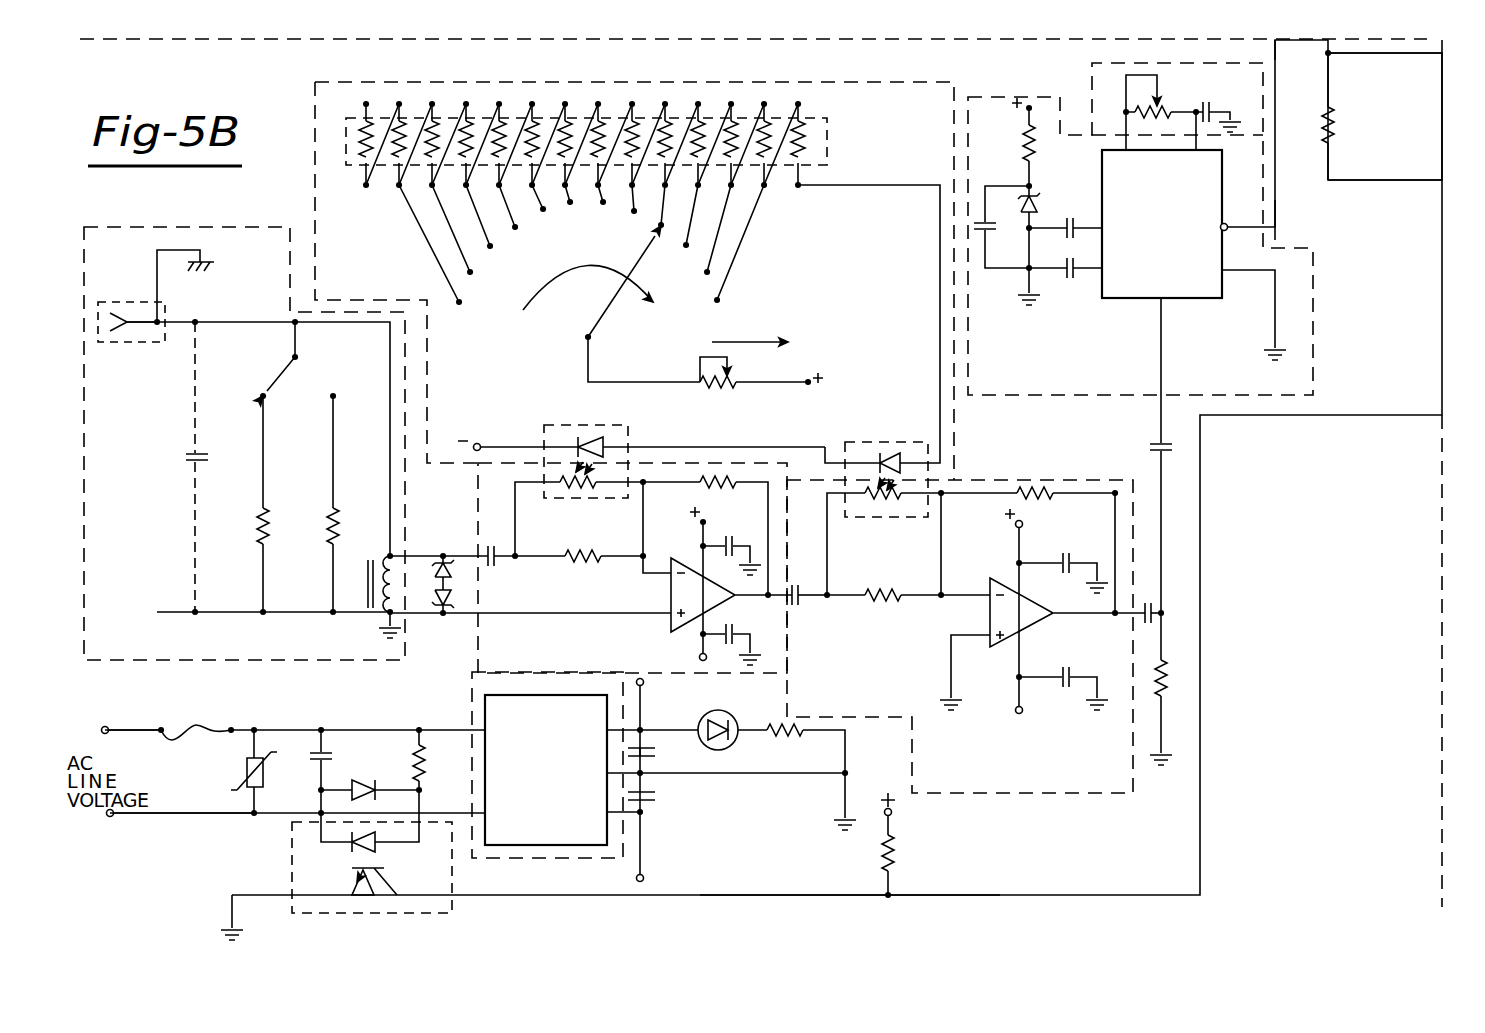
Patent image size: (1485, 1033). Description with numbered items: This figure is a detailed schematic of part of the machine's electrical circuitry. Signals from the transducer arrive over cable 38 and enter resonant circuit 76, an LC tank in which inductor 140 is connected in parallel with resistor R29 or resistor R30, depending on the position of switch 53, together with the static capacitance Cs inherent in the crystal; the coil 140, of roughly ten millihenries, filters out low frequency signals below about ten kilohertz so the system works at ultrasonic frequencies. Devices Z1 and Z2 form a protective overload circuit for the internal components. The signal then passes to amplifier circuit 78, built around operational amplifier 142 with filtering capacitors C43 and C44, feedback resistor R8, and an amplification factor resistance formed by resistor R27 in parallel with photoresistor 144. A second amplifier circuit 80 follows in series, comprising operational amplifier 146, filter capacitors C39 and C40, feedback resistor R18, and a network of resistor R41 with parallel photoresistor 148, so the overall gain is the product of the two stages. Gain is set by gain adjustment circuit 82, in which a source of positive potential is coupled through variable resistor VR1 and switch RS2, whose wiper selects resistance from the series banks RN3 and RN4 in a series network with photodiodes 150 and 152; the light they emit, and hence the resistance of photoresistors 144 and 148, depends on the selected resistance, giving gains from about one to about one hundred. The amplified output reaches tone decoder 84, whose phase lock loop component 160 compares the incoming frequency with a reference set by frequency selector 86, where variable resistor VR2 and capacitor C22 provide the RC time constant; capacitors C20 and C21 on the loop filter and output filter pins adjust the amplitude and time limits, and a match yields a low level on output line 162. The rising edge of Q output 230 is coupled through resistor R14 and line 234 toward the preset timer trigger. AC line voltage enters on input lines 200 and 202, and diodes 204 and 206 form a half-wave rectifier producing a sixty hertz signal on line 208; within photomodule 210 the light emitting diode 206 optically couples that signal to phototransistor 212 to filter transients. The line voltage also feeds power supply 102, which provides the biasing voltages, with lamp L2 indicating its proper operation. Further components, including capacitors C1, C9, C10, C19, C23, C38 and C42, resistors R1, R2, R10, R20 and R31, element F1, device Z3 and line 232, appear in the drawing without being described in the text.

The resonant circuit 76 is at (208, 227).
The cable 38 is at (129, 342).
The switch 53 is at (300, 360).
The static capacitance Cs is at (202, 458).
The resistor R29 is at (258, 526).
The resistor R30 is at (328, 510).
The inductor 140 is at (380, 618).
The overload protection device Z1 is at (436, 562).
The overload protection device Z2 is at (440, 617).
The capacitor C42 is at (490, 540).
The amplifier circuit 78 is at (478, 472).
The gain adjustment circuit 82 is at (926, 82).
The resistor element bank RN3 is at (830, 142).
The resistor element bank RN4 is at (357, 166).
The pole switch RS2 is at (586, 330).
The photodiode 152 is at (600, 425).
The photoresistor 144 is at (564, 498).
The variable resistor VR1 is at (722, 386).
The amplification factor resistor R27 is at (580, 560).
The operational amplifier 142 is at (671, 618).
The feedback resistor R8 is at (710, 488).
The filtering capacitor C44 is at (744, 541).
The filtering capacitor C43 is at (734, 630).
The photodiode 150 is at (908, 426).
The photoresistor 148 is at (890, 508).
The amplification factor resistor R41 is at (873, 600).
The operational amplifier 146 is at (990, 617).
The feedback resistor R18 is at (1062, 470).
The filter capacitor C39 is at (1085, 540).
The capacitor C38 is at (1090, 660).
The filter capacitor C40 is at (1156, 600).
The resistor R20 is at (1165, 665).
The capacitor C19 is at (1160, 448).
The amplifier circuit 80 is at (1030, 810).
The tone decoder 84 is at (997, 97).
The frequency selector 86 is at (1092, 68).
The resistor R31 is at (1025, 140).
The zener diode Z3 is at (1033, 190).
The capacitor C20 is at (1085, 212).
The capacitor C23 is at (987, 230).
The capacitor C21 is at (1070, 270).
The variable resistor VR2 is at (1158, 110).
The capacitor C22 is at (1208, 110).
The phase lock loop circuit component 160 is at (1111, 298).
The output line 162 is at (1278, 212).
The Q output 230 is at (1321, 48).
The line 232 is at (1372, 55).
The resistor R14 is at (1334, 132).
The line 234 is at (1402, 160).
The input line 200 is at (150, 728).
The fuse F1 is at (200, 718).
The input line 202 is at (138, 818).
The capacitor C1 is at (308, 756).
The diode 204 is at (354, 779).
The resistor R1 is at (420, 770).
The photomodule 210 is at (292, 857).
The light emitting diode 206 is at (352, 848).
The phototransistor 212 is at (372, 896).
The power supply 102 is at (472, 680).
The capacitor C9 is at (655, 755).
The capacitor C10 is at (655, 796).
The lamp L2 is at (752, 700).
The resistor R10 is at (780, 735).
The line 208 is at (821, 895).
The resistor R2 is at (902, 854).